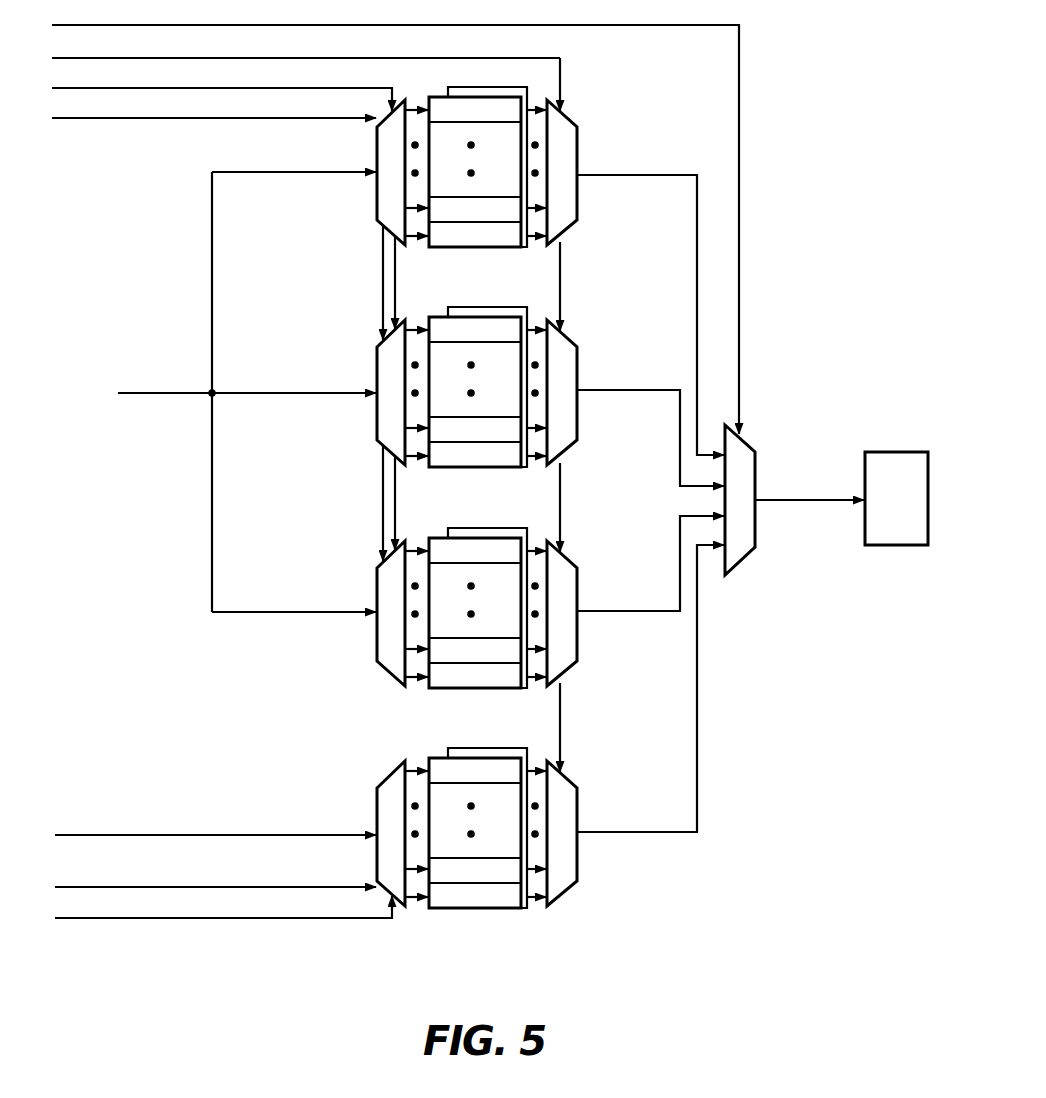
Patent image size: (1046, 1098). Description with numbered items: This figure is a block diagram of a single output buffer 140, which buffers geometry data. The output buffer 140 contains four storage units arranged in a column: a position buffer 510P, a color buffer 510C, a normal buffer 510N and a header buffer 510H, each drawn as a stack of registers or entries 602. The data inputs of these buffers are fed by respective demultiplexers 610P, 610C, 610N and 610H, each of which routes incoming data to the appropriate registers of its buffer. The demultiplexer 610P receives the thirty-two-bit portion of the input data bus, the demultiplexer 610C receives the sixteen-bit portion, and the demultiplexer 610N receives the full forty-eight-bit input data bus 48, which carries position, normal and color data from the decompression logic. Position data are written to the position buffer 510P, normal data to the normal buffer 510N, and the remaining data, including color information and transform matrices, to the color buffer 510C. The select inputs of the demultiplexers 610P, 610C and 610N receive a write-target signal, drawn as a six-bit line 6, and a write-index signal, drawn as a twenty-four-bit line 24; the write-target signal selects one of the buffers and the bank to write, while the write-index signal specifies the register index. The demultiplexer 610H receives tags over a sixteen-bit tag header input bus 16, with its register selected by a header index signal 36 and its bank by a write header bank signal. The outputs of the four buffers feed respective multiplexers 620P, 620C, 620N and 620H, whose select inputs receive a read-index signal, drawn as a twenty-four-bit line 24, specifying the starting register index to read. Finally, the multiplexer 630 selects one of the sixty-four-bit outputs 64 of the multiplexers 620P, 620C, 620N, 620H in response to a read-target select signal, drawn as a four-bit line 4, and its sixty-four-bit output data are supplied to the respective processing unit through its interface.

The output buffer 140 is at (816, 73).
The position buffer 510P is at (512, 85).
The color buffer 510C is at (475, 386).
The normal buffer 510N is at (480, 607).
The header buffer 510H is at (480, 827).
The buffer entry 602 is at (516, 124).
The demultiplexer 610P is at (377, 137).
The demultiplexer 610C is at (345, 392).
The demultiplexer 610N is at (345, 613).
The demultiplexer 610H is at (346, 833).
The multiplexer 620P is at (577, 137).
The multiplexer 620C is at (608, 392).
The multiplexer 620N is at (608, 613).
The multiplexer 620H is at (609, 833).
The multiplexer 630 is at (738, 553).
The readtarget bus (4 bits) 4 is at (316, 31).
The readindex bus (6 bits) 6 is at (198, 94).
The writeindex bus (24 bits) 24 is at (218, 124).
The datain bus (48 bits) 48 is at (199, 387).
The tagheaderin bus (16 bits) 16 is at (208, 841).
The headerindex bus (36 bits) 36 is at (216, 893).
The 64-bit output data bus 64 is at (649, 169).